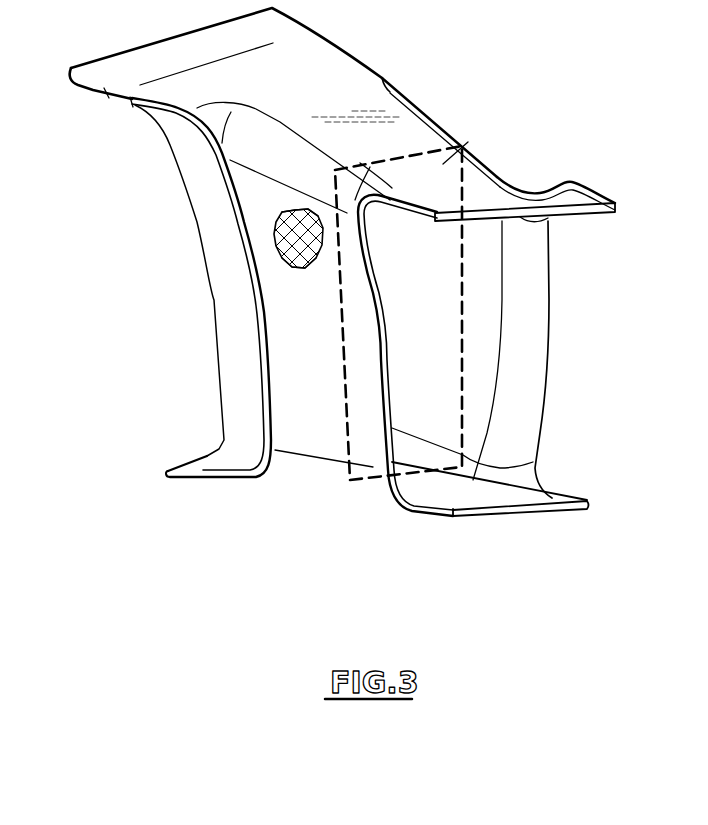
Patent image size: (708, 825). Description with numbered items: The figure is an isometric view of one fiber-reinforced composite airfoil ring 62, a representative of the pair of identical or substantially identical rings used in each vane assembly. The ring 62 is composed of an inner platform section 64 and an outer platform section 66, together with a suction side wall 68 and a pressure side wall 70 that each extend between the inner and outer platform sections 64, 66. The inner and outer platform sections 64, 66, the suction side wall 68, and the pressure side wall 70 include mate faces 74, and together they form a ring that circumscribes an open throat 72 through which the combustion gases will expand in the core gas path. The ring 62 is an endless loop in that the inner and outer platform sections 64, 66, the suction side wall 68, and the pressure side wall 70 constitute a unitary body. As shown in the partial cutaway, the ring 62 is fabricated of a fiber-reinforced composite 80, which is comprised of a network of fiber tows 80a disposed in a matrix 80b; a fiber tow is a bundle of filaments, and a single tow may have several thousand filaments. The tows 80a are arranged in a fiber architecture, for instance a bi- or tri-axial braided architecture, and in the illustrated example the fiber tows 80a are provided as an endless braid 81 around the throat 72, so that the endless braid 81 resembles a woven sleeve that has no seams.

The fiber-reinforced composite airfoil ring 62 is at (339, 291).
The inner platform section 64 is at (463, 498).
The outer platform section 66 is at (463, 147).
The suction side wall 68 is at (333, 412).
The pressure side wall 70 is at (488, 321).
The open throat 72 is at (423, 282).
The mate faces 74 is at (98, 90).
The fiber-reinforced composite 80 is at (298, 270).
The fiber tows 80a is at (276, 236).
The matrix 80b is at (280, 260).
The endless braid 81 is at (478, 196).